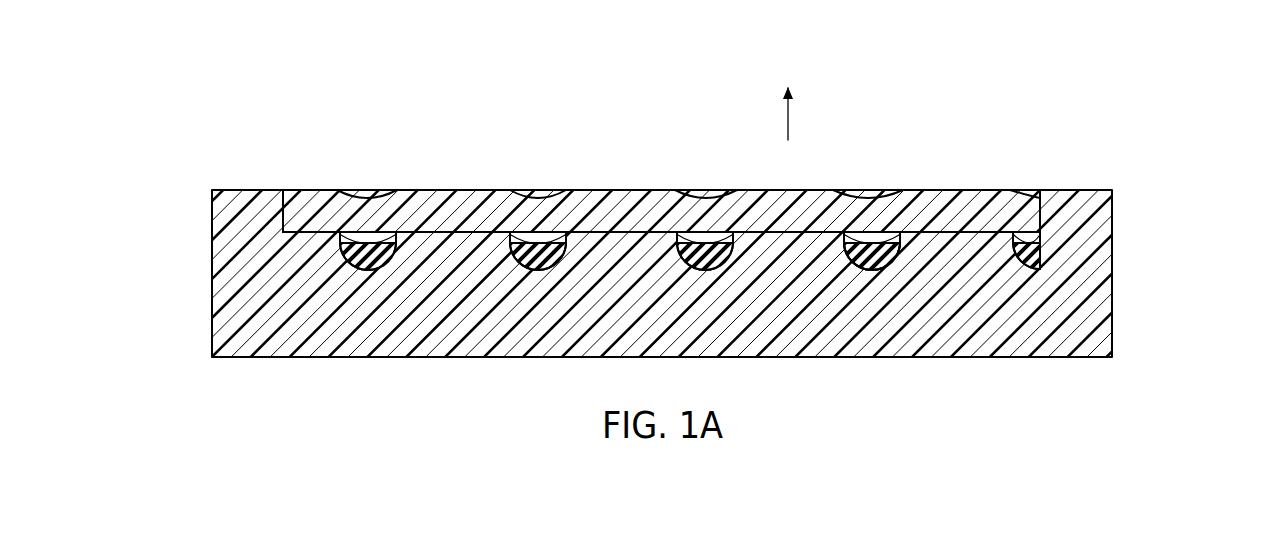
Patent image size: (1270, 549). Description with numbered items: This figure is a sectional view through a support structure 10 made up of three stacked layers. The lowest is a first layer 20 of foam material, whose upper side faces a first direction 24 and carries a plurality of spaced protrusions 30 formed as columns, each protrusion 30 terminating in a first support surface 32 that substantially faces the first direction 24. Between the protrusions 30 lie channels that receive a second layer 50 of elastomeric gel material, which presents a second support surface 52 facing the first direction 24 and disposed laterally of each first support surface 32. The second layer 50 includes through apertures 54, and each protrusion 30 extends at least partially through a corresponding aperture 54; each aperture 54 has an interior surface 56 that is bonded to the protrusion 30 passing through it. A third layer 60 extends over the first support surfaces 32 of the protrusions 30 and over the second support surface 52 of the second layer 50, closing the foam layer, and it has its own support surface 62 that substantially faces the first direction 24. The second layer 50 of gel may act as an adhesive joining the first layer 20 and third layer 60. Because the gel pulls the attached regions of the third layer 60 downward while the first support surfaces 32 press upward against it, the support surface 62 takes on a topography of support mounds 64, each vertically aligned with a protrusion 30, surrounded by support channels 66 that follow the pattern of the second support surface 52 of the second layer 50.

The support structure 10 is at (203, 147).
The first layer of foam material 20 is at (1122, 285).
The first direction 24 is at (788, 105).
The protrusions 30 is at (612, 238).
The first support surface 32 is at (628, 230).
The second layer of elastomeric gel material 50 is at (385, 250).
The second support surface 52 is at (873, 236).
The through apertures 54 is at (340, 252).
The interior surface 56 is at (404, 256).
The third layer 60 is at (1014, 187).
The support surface 62 is at (799, 189).
The support mounds 64 is at (769, 190).
The support channels 66 is at (704, 198).